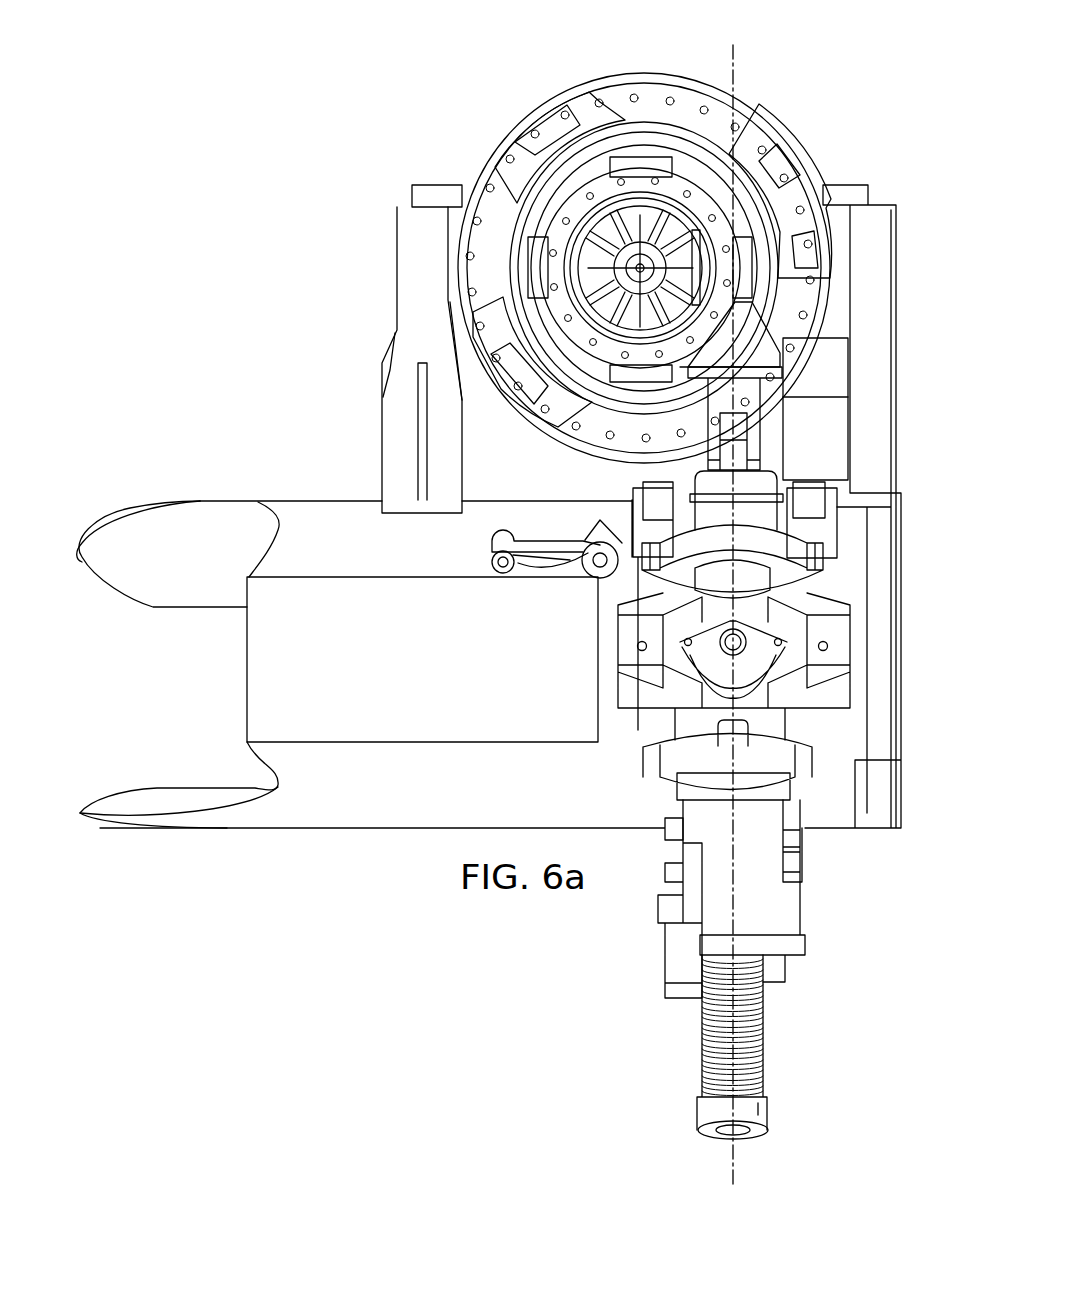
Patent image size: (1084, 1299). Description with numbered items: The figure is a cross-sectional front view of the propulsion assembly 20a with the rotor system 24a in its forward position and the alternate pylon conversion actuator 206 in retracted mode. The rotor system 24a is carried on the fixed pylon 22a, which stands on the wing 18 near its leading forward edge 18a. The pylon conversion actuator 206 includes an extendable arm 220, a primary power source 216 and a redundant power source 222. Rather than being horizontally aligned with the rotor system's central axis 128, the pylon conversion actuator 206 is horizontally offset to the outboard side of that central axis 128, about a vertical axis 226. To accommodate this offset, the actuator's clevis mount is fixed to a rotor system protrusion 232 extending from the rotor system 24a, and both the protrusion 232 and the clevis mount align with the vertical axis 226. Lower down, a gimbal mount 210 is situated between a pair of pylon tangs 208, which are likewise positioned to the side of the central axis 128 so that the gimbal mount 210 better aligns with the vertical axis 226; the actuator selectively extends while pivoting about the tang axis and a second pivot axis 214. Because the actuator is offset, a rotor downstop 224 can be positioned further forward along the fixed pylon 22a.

The wing 18 is at (354, 805).
The leading forward edge 18a is at (269, 657).
The propulsion assembly 20a is at (855, 63).
The fixed pylon 22a is at (402, 268).
The rotor system 24a is at (656, 62).
The central axis 128 is at (637, 262).
The pylon conversion actuator 206 is at (612, 487).
The pylon tangs 208 is at (857, 627).
The gimbal mount 210 is at (797, 633).
The pivot axis 214 is at (762, 448).
The primary power source 216 is at (835, 467).
The extendable arm 220 is at (760, 1075).
The redundant power source 222 is at (802, 900).
The rotor downstop 224 is at (528, 570).
The vertical axis 226 is at (735, 62).
The rotor system protrusion 232 is at (762, 338).